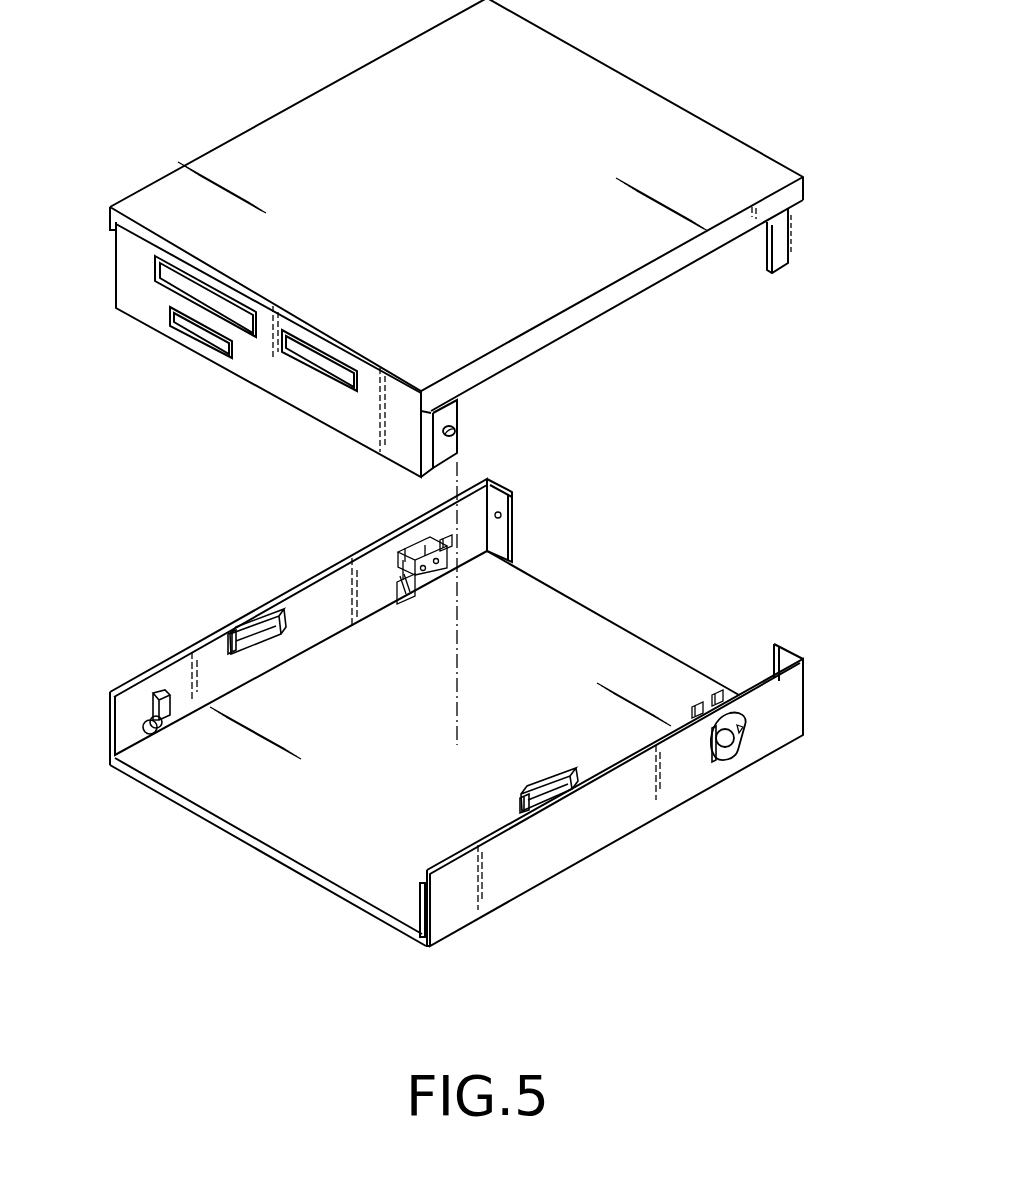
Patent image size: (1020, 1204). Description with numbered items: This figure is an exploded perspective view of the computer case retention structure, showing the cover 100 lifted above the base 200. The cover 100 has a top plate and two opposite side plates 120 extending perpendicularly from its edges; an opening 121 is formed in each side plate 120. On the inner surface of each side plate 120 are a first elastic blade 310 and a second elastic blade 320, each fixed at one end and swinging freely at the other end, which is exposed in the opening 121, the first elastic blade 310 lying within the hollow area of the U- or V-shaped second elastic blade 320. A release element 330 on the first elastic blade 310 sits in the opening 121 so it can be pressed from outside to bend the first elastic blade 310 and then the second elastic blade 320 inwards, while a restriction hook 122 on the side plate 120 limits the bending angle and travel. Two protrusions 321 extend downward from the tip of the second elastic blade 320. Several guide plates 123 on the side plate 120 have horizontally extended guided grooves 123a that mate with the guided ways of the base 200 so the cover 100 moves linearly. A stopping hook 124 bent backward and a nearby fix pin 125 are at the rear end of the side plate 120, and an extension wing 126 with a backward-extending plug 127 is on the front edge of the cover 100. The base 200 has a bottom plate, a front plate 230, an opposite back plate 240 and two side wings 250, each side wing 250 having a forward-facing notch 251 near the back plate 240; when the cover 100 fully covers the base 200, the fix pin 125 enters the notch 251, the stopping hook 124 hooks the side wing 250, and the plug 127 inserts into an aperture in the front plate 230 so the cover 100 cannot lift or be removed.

The cover 100 is at (550, 643).
The side plate 120 is at (483, 892).
The opening 121 is at (715, 753).
The restriction hook 122 is at (430, 560).
The guide plate 123 is at (268, 615).
The guided groove 123a is at (229, 633).
The stopping hook 124 is at (153, 706).
The fix pin 125 is at (148, 722).
The extension wing 126 is at (513, 497).
The plug 127 is at (503, 517).
The base 200 is at (340, 112).
The front plate 230 is at (758, 243).
The back plate 240 is at (300, 383).
The side wing 250 is at (445, 413).
The notch 251 is at (455, 428).
The first elastic blade 310 is at (443, 577).
The second elastic blade 320 is at (398, 572).
The protrusion 321 is at (448, 538).
The release element 330 is at (743, 743).